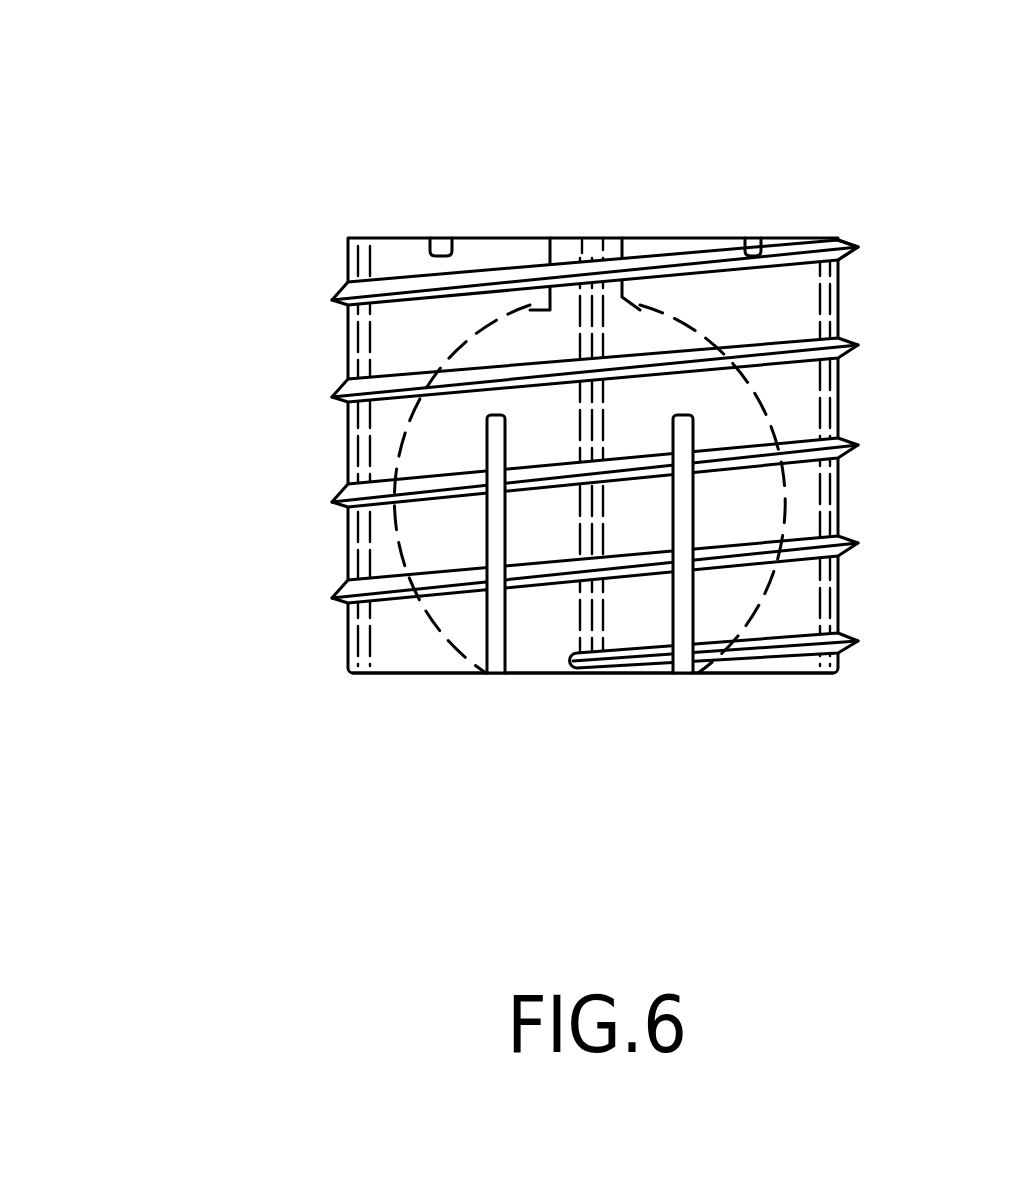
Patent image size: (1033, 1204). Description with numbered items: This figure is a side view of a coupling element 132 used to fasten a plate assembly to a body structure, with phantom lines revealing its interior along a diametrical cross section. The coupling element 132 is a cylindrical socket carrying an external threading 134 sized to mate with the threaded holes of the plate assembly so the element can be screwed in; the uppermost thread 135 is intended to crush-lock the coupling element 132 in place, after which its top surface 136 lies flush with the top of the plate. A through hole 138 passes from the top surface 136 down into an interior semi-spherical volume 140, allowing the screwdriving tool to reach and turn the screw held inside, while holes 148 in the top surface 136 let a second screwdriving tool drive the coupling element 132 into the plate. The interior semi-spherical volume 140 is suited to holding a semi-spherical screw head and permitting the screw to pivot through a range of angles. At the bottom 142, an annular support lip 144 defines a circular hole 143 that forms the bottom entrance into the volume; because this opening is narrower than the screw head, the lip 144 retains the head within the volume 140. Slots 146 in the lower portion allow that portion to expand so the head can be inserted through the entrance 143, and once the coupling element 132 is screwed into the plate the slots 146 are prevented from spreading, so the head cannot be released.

The coupling element 132 is at (333, 209).
The external threading 134 is at (333, 302).
The uppermost thread 135 is at (672, 252).
The top surface 136 is at (507, 238).
The through hole 138 is at (593, 250).
The interior semi-spherical volume 140 is at (593, 533).
The bottom 142 is at (395, 660).
The circular hole 143 is at (552, 678).
The annular support lip 144 is at (708, 664).
The slots 146 is at (505, 627).
The holes 148 is at (442, 238).